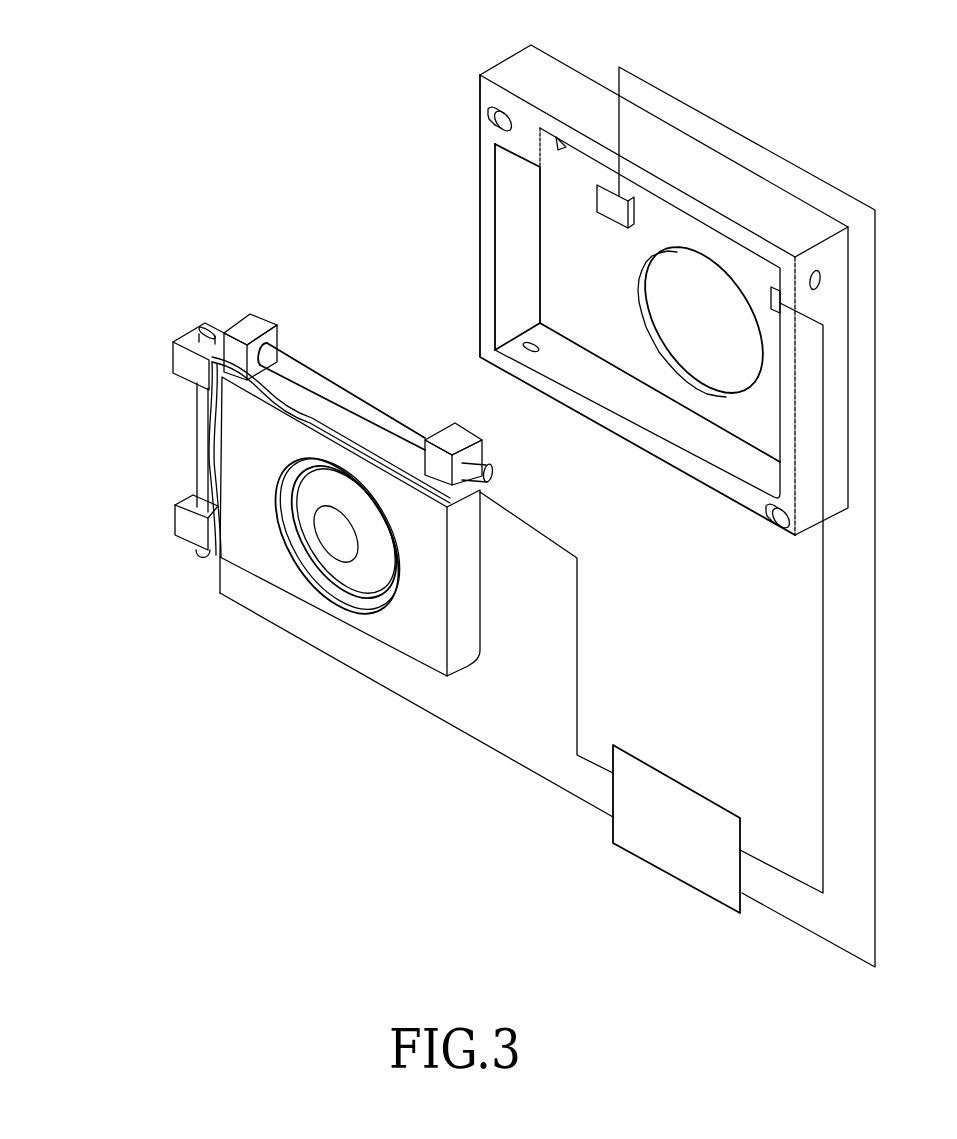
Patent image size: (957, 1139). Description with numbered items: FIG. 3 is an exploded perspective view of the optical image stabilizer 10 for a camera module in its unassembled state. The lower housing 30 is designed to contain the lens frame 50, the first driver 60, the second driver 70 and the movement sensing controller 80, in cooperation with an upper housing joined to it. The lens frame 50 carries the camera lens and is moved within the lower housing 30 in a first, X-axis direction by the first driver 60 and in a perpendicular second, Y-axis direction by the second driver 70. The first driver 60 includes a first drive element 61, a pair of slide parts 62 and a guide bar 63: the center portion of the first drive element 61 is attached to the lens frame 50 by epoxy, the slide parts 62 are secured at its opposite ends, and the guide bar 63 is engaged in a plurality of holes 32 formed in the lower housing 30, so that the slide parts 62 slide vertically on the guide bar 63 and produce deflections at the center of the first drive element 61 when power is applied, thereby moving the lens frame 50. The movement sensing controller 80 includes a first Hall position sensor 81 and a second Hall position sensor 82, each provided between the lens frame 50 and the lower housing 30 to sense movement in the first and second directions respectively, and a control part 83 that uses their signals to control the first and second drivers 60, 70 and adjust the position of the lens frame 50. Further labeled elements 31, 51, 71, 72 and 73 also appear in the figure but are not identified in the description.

The optical image stabilizer 10 is at (769, 74).
The lower housing 30 is at (372, 110).
The fastening bolt 31 is at (485, 116).
The holes 32 is at (528, 343).
The lens frame 50 is at (350, 617).
The lens 51 is at (332, 540).
The first driver 60 is at (104, 355).
The first drive element 61 is at (205, 412).
The slide parts 62 is at (178, 357).
The guide bar 63 is at (212, 455).
The second driver 70 is at (342, 232).
The shaft 71 is at (342, 425).
The support block 72 is at (243, 316).
The flexible cable 73 is at (305, 374).
The movement sensing controller 80 is at (660, 606).
The first Hall position sensor 81 is at (610, 215).
The second Hall position sensor 82 is at (777, 314).
The control part 83 is at (671, 778).